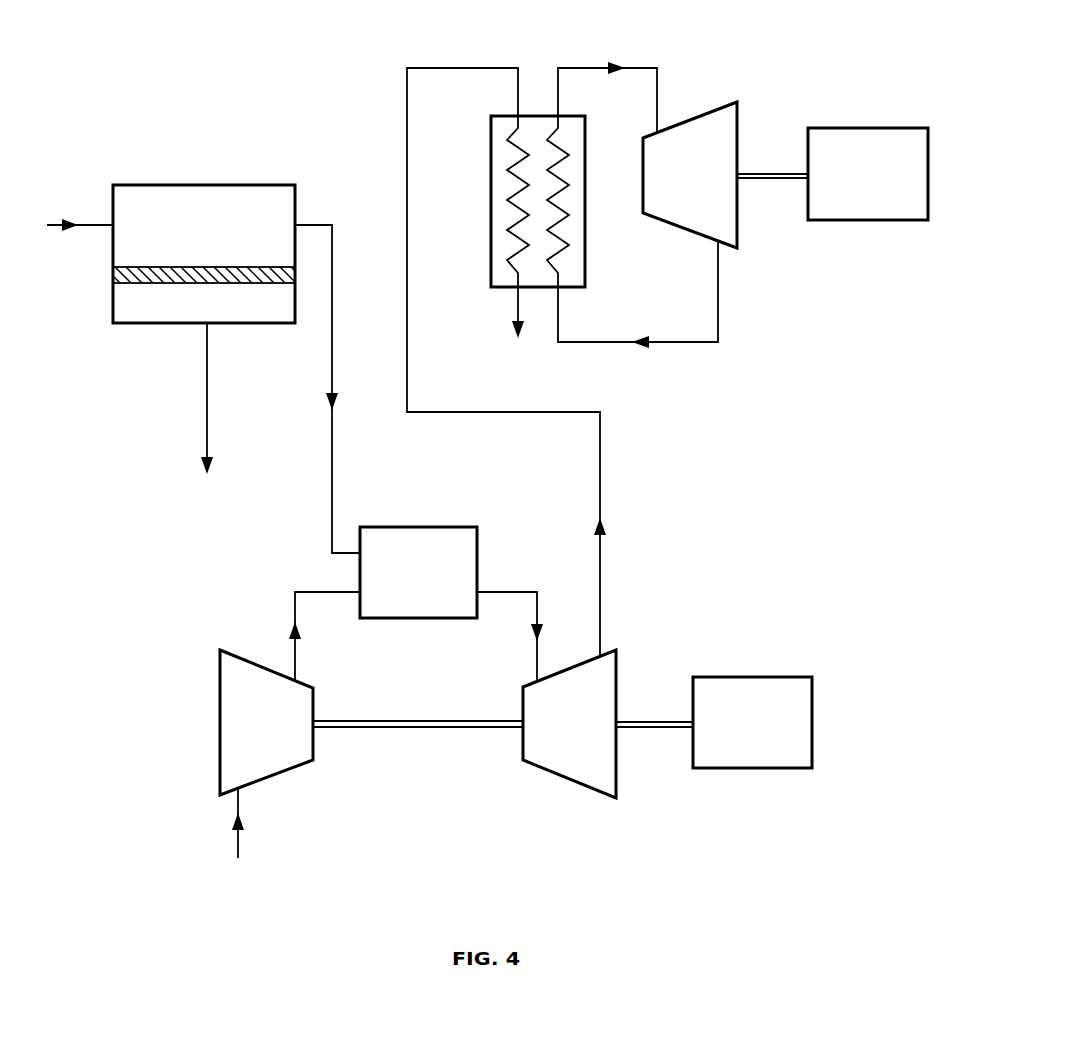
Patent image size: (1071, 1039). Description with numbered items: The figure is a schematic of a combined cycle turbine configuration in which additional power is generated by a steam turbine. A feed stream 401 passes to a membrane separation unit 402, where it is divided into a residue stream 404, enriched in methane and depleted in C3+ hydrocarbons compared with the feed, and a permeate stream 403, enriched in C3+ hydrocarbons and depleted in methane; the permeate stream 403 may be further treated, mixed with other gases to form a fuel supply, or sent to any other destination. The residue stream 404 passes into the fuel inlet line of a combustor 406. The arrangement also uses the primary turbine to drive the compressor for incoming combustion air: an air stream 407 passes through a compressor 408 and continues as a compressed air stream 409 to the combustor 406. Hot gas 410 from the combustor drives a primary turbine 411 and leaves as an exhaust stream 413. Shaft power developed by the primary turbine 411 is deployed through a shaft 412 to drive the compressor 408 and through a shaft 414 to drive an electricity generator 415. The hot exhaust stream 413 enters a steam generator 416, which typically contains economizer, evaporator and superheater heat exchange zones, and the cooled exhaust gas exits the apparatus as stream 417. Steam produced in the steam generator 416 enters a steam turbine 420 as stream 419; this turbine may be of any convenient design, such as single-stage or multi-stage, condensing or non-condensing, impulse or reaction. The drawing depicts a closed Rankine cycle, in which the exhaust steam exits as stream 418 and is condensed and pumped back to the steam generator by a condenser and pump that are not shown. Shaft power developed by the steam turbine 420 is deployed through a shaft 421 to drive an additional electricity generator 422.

The feed stream 401 is at (80, 238).
The membrane separation unit 402 is at (130, 325).
The permeate stream 403 is at (207, 414).
The residue stream 404 is at (322, 389).
The combustor 406 is at (472, 527).
The air stream 407 is at (238, 837).
The compressor 408 is at (218, 662).
The compressed air stream 409 is at (324, 636).
The hot gas 410 is at (510, 637).
The primary turbine 411 is at (555, 773).
The shaft 412 is at (413, 730).
The exhaust stream 413 is at (525, 362).
The shaft 414 is at (653, 728).
The electricity generator 415 is at (757, 677).
The steam generator 416 is at (491, 257).
The cooled exhaust gas stream 417 is at (518, 328).
The exhaust steam stream 418 is at (638, 308).
The steam stream 419 is at (607, 87).
The steam turbine 420 is at (715, 107).
The shaft 421 is at (778, 179).
The additional electricity generator 422 is at (873, 128).